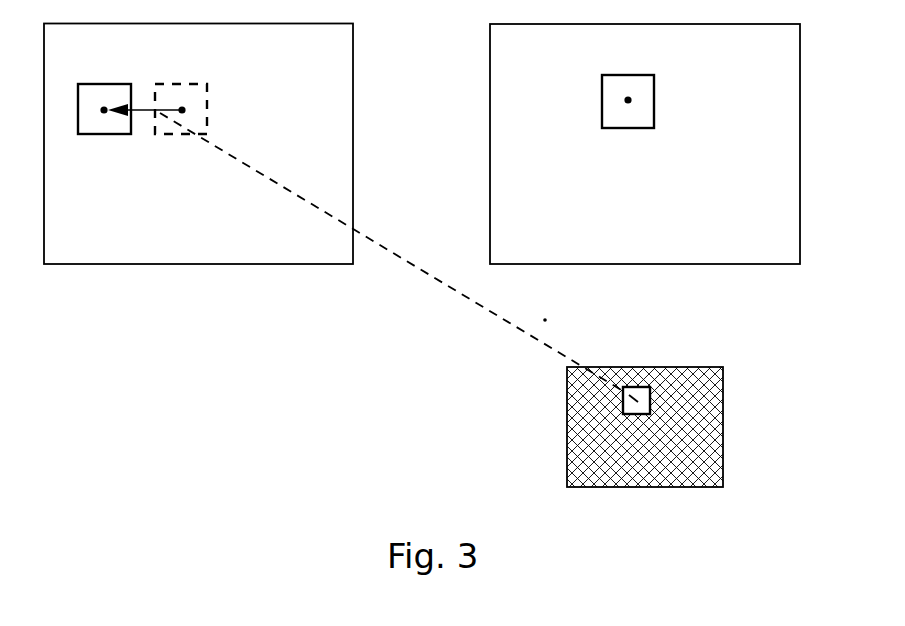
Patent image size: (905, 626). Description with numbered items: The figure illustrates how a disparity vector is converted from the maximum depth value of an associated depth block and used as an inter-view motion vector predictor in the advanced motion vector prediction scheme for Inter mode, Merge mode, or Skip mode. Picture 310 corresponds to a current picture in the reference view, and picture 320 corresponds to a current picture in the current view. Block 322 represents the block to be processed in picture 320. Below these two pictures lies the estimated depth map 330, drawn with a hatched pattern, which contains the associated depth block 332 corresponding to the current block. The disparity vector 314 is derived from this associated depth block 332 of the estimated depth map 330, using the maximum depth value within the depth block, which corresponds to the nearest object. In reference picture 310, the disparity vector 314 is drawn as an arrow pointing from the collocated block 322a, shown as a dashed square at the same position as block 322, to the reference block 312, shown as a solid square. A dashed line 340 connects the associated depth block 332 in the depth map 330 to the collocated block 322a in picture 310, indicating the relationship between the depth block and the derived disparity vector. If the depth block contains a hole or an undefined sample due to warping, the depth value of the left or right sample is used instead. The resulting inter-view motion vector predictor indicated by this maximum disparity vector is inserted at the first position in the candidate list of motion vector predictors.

The current picture in the reference view 310 is at (353, 110).
The reference block 312 is at (104, 84).
The disparity vector 314 is at (144, 112).
The current picture in the current view 320 is at (800, 110).
The block to be processed 322 is at (628, 75).
The collocated block 322a is at (186, 84).
The estimated depth map 330 is at (723, 427).
The associated depth block 332 is at (646, 387).
The transfer path 340 is at (395, 255).